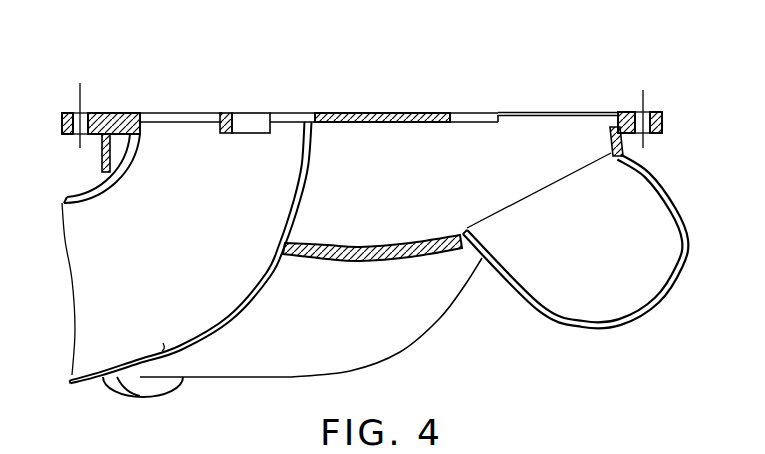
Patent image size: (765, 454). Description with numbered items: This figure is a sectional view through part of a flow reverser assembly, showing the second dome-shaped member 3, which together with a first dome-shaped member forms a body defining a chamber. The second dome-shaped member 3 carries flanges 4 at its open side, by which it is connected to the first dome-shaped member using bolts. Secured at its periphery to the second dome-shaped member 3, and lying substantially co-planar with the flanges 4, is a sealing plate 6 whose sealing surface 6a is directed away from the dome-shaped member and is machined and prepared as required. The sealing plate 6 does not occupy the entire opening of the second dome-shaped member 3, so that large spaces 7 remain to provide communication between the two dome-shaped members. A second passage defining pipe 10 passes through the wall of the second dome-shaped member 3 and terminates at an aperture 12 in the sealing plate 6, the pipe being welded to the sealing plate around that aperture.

The second dome-shaped member 3 is at (432, 253).
The flanges 4 is at (70, 113).
The sealing plate 6 is at (305, 198).
The sealing surface 6a is at (320, 104).
The large spaces 7 is at (573, 112).
The second passage defining pipe 10 is at (135, 373).
The aperture 12 is at (162, 115).